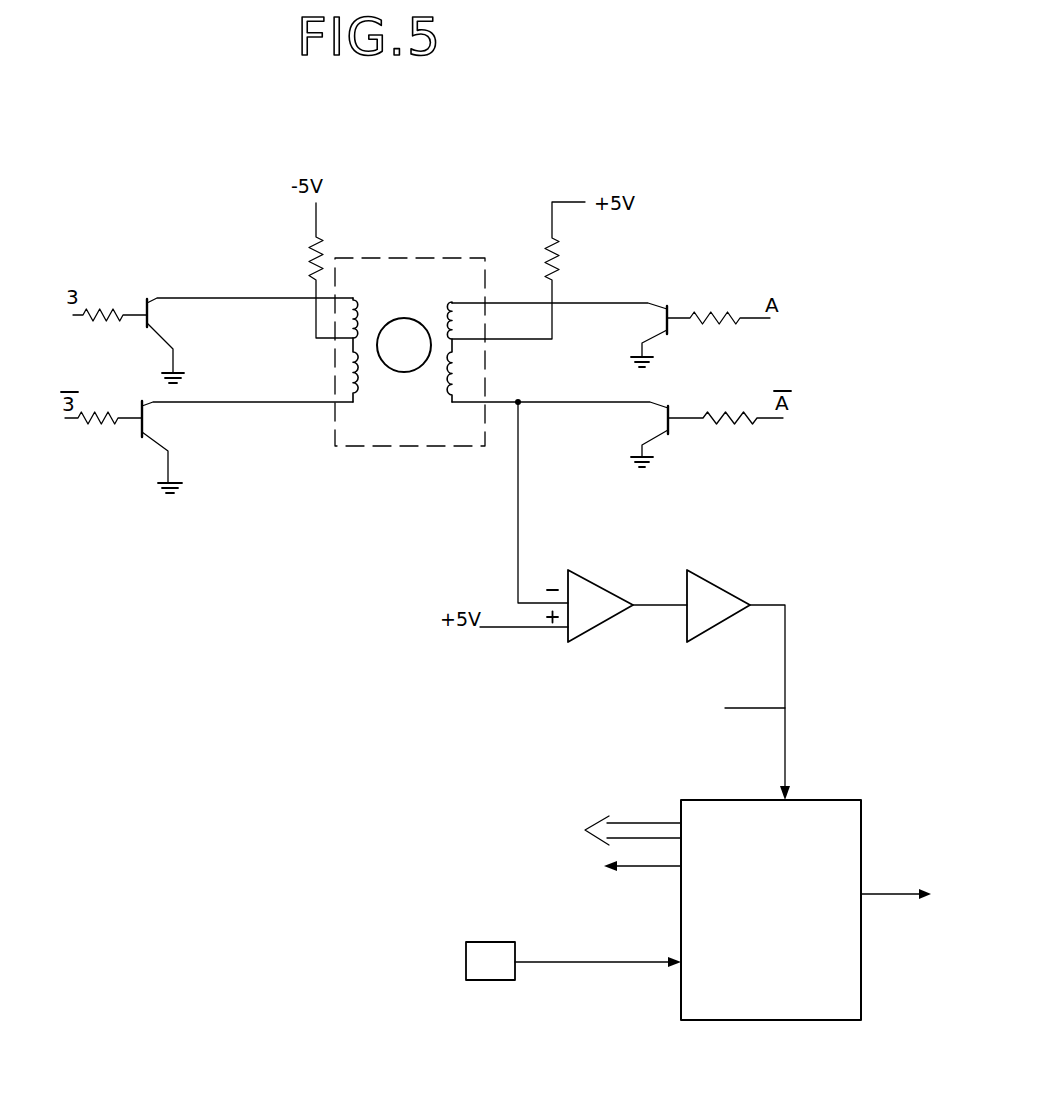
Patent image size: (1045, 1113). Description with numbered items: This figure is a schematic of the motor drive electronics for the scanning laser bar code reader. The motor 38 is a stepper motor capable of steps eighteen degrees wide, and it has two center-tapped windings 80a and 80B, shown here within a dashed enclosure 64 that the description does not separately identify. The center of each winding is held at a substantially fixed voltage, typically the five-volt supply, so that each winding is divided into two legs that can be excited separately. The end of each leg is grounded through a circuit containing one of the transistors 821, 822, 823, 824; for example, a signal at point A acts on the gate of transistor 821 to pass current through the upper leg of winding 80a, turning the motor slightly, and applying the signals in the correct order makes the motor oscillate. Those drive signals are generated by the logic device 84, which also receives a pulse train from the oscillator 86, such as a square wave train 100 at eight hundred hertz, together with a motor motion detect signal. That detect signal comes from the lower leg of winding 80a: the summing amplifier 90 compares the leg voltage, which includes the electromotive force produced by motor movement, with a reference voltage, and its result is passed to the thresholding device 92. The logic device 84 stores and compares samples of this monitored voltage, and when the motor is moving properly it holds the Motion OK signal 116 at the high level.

The transistor 823 is at (187, 253).
The transistor 824 is at (145, 437).
The transistor 821 is at (649, 290).
The transistor 822 is at (677, 440).
The stepper motor 64 is at (417, 257).
The winding 80a is at (456, 293).
The winding 80B is at (352, 414).
The summing amplifier 90 is at (595, 582).
The thresholding device 92 is at (715, 632).
The oscillator 86 is at (732, 712).
The logic device 84 is at (832, 800).
The Motion OK signal 116 is at (910, 898).
The motor 38 is at (503, 981).
The square wave train 100 is at (613, 963).